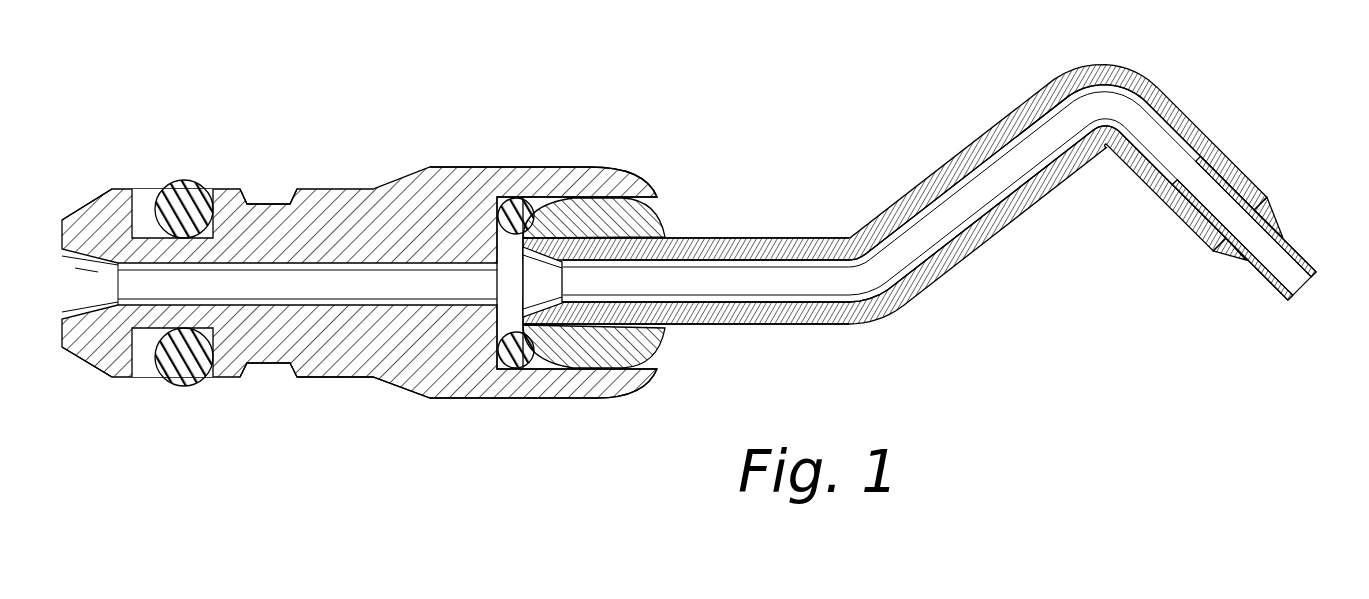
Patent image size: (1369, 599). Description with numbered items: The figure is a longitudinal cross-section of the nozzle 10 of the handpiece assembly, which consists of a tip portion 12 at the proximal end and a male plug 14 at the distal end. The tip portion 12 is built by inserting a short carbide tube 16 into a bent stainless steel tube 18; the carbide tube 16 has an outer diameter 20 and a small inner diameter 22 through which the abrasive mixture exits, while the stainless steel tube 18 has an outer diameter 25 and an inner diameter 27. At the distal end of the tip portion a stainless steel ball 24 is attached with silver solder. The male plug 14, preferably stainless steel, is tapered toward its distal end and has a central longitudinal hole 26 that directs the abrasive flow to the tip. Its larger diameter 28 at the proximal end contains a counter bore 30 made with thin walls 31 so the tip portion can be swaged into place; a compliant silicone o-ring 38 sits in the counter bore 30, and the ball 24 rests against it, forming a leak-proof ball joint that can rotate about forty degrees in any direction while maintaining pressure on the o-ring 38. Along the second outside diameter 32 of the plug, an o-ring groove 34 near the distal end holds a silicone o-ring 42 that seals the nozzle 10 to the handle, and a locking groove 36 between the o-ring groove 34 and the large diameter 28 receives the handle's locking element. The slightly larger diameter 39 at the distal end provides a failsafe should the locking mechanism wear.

The nozzle 10 is at (383, 465).
The tip portion 12 is at (993, 350).
The male plug 14 is at (345, 140).
The carbide tube 16 is at (1307, 253).
The stainless steel tube 18 is at (1010, 113).
The outer diameter of the carbide tube 20 is at (1267, 287).
The inner diameter of the carbide tube 22 is at (1243, 225).
The stainless steel ball 24 is at (658, 337).
The outer diameter of the stainless steel tube 25 is at (850, 233).
The longitudinal hole 26 is at (378, 288).
The inner diameter of the stainless steel tube 27 is at (840, 290).
The larger diameter 28 is at (520, 400).
The counter bore 30 is at (543, 360).
The thin walls 31 is at (610, 180).
The second outside diameter 32 is at (350, 380).
The o-ring groove 34 is at (145, 197).
The locking groove 36 is at (270, 203).
The silicone o-ring 38 is at (515, 210).
The diameter 39 is at (111, 190).
The silicone o-ring 42 is at (187, 199).